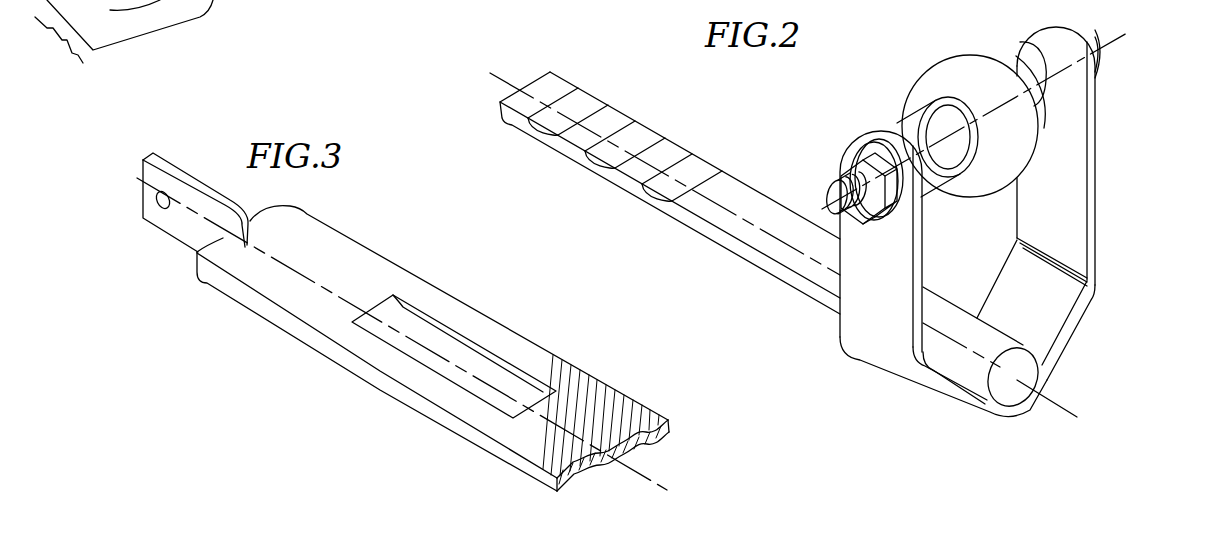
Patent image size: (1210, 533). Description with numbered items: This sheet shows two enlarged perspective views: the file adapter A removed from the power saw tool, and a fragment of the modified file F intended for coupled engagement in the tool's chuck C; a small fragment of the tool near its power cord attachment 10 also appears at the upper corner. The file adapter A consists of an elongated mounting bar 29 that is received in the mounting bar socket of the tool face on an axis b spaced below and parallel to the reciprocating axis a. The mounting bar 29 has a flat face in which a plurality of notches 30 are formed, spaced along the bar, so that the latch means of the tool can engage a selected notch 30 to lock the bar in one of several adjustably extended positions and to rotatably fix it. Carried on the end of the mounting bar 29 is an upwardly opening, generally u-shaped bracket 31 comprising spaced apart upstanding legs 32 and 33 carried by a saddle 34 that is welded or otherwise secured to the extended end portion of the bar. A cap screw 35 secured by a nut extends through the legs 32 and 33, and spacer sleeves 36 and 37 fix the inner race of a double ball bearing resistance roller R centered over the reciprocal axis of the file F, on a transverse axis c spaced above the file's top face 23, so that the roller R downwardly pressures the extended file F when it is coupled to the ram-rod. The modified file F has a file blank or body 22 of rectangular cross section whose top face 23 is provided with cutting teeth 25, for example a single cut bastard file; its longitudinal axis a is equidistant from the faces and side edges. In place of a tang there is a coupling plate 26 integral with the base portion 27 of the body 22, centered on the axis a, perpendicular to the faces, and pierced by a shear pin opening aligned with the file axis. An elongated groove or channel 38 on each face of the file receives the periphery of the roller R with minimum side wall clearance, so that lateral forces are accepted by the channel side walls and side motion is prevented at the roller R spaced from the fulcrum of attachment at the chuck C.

In FIG. 3, the power cord attachment 10 is at (88, 63).
In FIG. 3, the file body 22 is at (537, 448).
In FIG. 3, the top face 23 is at (520, 353).
In FIG. 3, the cutting teeth 25 is at (600, 408).
In FIG. 3, the coupling plate 26 is at (180, 223).
In FIG. 3, the base portion 27 is at (302, 250).
In FIG. 2, the mounting bar 29 is at (748, 242).
In FIG. 2, the notch 30 is at (580, 105).
In FIG. 2, the u-shaped bracket 31 is at (1007, 222).
In FIG. 2, the upstanding leg 32 is at (893, 238).
In FIG. 2, the upstanding leg 33 is at (1066, 210).
In FIG. 2, the saddle 34 is at (1040, 313).
In FIG. 2, the cap screw 35 is at (1080, 37).
In FIG. 2, the spacer sleeve 36 is at (907, 137).
In FIG. 2, the spacer sleeve 37 is at (1013, 77).
In FIG. 3, the groove or channel 38 is at (440, 347).
In FIG. 3, the reciprocating axis a is at (137, 180).
In FIG. 2, the axis of mounting bar socket b is at (513, 75).
In FIG. 2, the file adapter A is at (827, 163).
In FIG. 2, the chuck C is at (1035, 93).
In FIG. 3, the file F is at (445, 279).
In FIG. 2, the resistance roller R is at (948, 69).